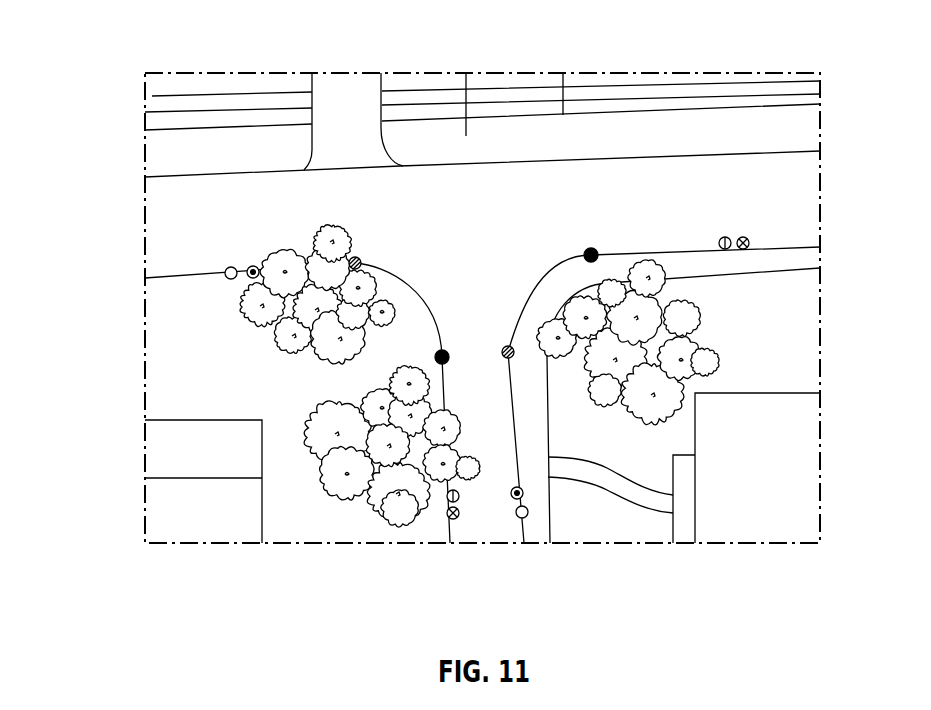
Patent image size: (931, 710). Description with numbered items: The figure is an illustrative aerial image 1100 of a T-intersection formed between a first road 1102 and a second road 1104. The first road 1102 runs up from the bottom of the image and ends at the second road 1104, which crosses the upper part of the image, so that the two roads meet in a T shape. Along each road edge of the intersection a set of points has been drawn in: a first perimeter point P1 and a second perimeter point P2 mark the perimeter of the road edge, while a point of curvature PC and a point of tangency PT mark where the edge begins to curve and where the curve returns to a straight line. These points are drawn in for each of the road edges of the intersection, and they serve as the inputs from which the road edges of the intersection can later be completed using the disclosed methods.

The aerial image 1100 is at (137, 27).
The second road 1104 is at (271, 190).
The first road 1102 is at (483, 544).
The point of curvature PC is at (356, 257).
The point of tangency PT is at (436, 356).
The first perimeter point P1 is at (229, 267).
The second perimeter point P2 is at (447, 513).